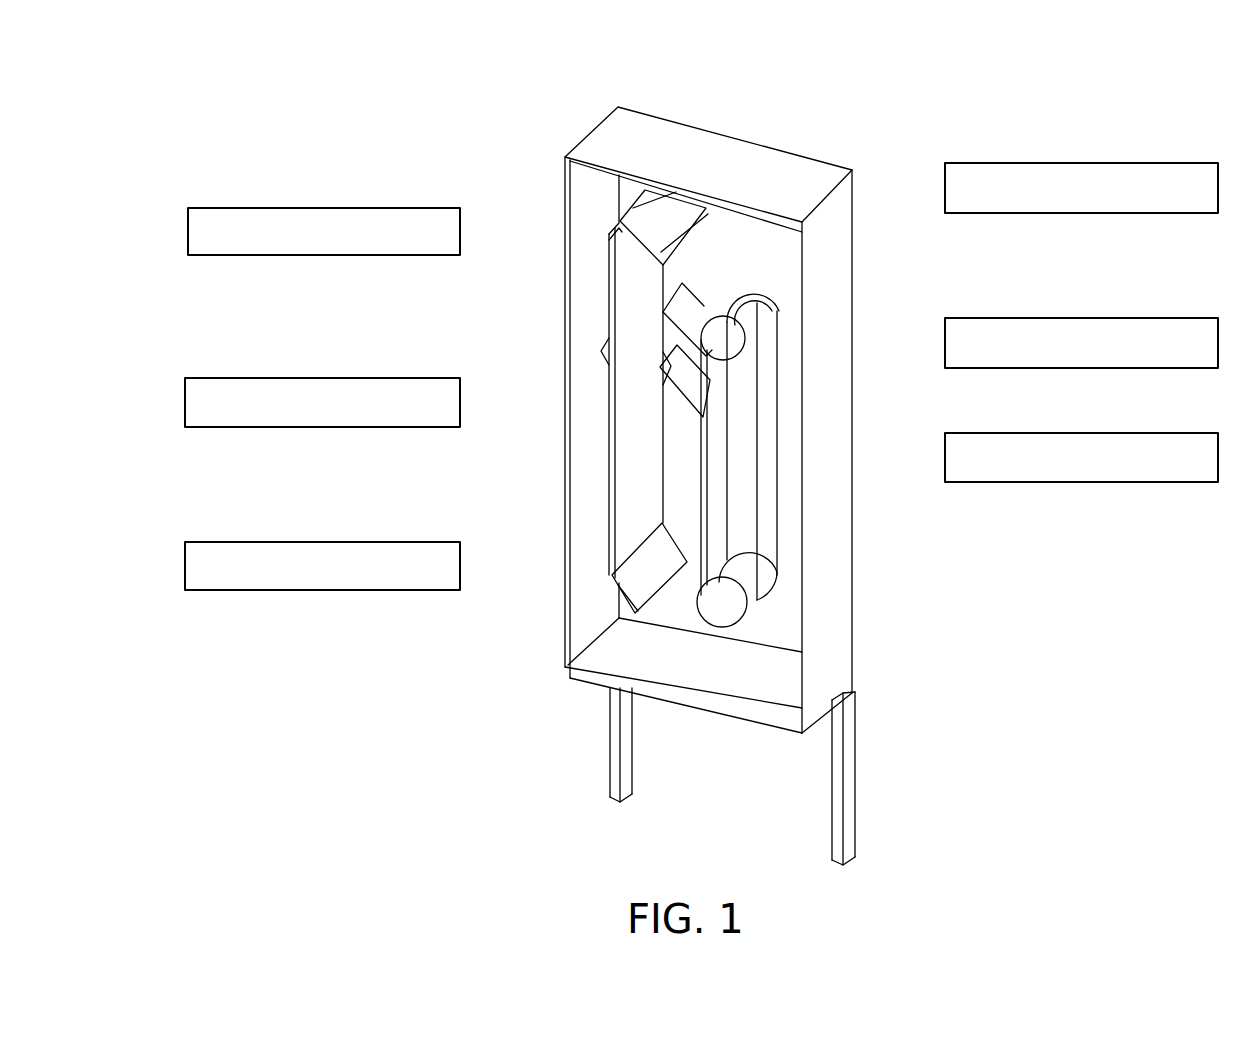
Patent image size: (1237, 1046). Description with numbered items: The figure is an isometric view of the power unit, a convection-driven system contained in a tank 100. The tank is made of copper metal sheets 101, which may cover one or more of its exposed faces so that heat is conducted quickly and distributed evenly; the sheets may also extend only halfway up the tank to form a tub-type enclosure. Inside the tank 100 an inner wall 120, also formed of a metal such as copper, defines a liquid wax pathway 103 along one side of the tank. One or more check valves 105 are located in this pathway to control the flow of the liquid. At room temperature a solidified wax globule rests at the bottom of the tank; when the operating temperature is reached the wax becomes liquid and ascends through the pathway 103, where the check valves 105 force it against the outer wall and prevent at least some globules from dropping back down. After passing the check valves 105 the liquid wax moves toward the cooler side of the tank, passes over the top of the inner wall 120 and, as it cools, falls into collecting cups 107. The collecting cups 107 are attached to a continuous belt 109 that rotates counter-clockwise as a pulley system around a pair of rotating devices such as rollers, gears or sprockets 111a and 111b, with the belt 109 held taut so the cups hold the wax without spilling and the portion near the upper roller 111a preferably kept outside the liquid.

The tank 100 is at (710, 486).
The copper metal sheets 101 is at (580, 678).
The liquid wax pathway 103 is at (588, 507).
The check valves 105 is at (602, 460).
The collecting cups 107 is at (695, 293).
The continuous belt 109 is at (768, 453).
The upper roller 111a is at (732, 329).
The lower roller 111b is at (784, 558).
The inner wall 120 is at (615, 238).